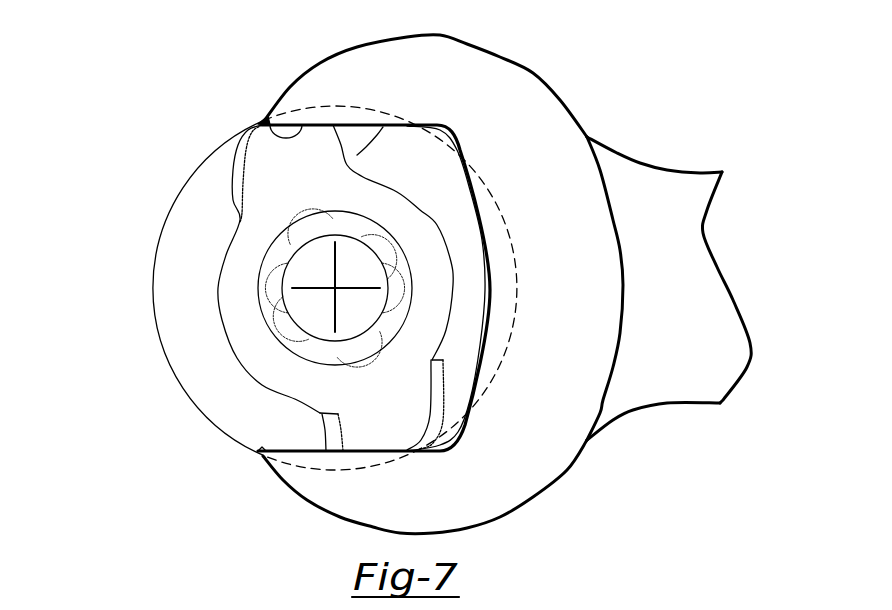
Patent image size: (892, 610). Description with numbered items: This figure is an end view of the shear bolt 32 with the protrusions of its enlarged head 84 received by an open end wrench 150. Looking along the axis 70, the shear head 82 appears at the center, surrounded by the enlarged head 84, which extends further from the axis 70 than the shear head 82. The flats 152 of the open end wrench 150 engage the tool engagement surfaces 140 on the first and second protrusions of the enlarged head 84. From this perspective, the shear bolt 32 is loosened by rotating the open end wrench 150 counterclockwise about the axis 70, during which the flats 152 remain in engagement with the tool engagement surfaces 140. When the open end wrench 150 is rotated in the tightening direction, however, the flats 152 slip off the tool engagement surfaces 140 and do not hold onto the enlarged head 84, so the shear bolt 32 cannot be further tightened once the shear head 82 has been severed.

The shear bolt 32 is at (305, 283).
The axis 70 is at (335, 288).
The shear head 82 is at (257, 292).
The enlarged head 84 is at (170, 207).
The tool engagement surfaces 140 is at (322, 125).
The open end wrench 150 is at (638, 160).
The flats 152 is at (263, 121).